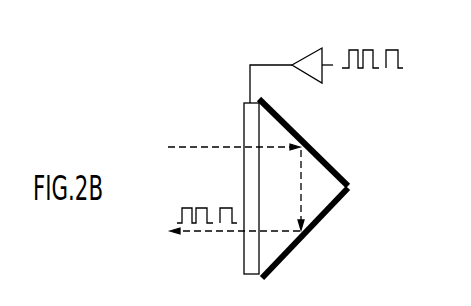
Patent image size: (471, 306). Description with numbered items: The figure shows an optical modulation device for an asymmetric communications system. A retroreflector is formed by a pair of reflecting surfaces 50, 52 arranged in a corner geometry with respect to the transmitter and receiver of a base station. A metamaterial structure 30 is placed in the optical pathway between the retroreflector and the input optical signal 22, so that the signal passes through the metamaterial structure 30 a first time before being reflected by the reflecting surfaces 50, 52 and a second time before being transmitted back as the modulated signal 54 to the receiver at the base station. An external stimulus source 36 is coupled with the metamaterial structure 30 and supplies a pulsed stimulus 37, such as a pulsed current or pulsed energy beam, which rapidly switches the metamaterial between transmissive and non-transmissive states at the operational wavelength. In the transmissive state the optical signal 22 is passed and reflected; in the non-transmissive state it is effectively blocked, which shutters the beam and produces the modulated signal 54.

The input optical signal 22 is at (210, 146).
The metamaterial structure 30 is at (244, 121).
The external stimulus source 36 is at (308, 53).
The pulsed stimulus 37 is at (401, 55).
The reflecting surface 50 is at (322, 153).
The reflecting surface 52 is at (332, 212).
The modulated signal 54 is at (216, 236).